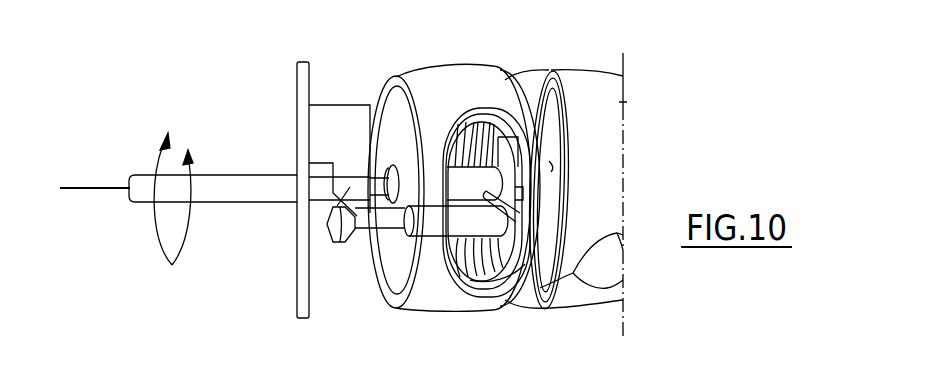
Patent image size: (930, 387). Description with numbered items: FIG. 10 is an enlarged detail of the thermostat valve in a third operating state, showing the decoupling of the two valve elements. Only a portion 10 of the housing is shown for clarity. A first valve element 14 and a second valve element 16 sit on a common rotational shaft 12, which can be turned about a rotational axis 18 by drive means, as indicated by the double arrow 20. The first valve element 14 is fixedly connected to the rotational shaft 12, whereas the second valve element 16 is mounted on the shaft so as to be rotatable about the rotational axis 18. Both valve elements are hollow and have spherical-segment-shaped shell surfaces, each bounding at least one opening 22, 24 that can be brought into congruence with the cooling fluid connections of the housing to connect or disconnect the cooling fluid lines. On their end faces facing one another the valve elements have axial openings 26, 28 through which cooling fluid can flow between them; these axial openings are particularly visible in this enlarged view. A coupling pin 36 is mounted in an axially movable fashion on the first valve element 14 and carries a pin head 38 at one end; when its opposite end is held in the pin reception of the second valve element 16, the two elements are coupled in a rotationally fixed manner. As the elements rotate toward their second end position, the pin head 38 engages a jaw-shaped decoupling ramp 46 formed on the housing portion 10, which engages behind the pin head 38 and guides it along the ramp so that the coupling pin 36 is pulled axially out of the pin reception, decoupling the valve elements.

The housing portion 10 is at (299, 295).
The rotational shaft 12 is at (252, 204).
The first valve element 14 is at (434, 84).
The second valve element 16 is at (567, 87).
The rotational axis 18 is at (77, 193).
The double arrow 20 is at (172, 265).
The opening 22 is at (447, 296).
The opening 24 is at (600, 303).
The axial opening 26 is at (486, 272).
The axial opening 28 is at (568, 173).
The coupling pin 36 is at (384, 292).
The pin head 38 is at (343, 248).
The decoupling ramp 46 is at (352, 195).